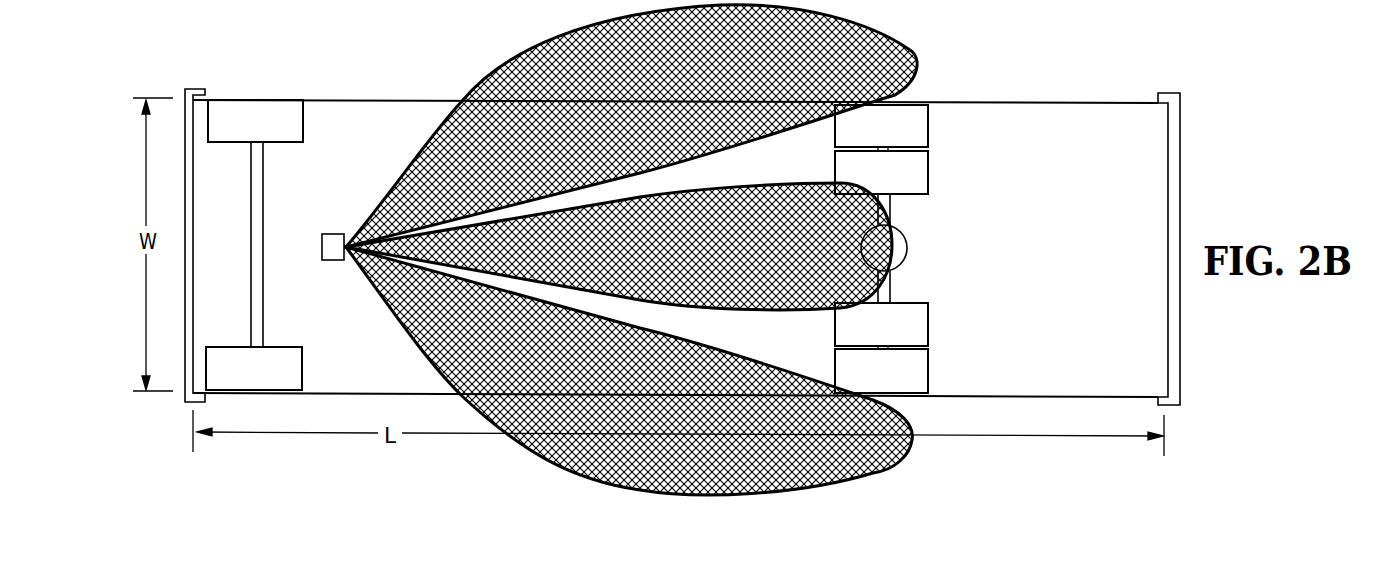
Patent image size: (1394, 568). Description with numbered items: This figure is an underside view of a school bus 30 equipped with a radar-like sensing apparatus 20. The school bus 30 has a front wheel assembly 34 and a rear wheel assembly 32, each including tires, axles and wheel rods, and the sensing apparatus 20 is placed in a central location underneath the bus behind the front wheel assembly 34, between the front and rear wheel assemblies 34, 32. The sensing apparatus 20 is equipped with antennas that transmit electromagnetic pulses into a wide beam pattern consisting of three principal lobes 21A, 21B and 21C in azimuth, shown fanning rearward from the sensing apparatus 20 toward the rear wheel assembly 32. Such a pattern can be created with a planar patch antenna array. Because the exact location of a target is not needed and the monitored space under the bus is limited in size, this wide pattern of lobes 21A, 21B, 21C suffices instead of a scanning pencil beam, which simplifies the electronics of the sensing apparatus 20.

The sensing apparatus 20 is at (333, 234).
The principal lobe 21A is at (583, 149).
The principal lobe 21B is at (679, 261).
The principal lobe 21C is at (583, 370).
The school bus 30 is at (1089, 117).
The rear wheel assembly 32 is at (893, 117).
The front wheel assembly 34 is at (267, 112).